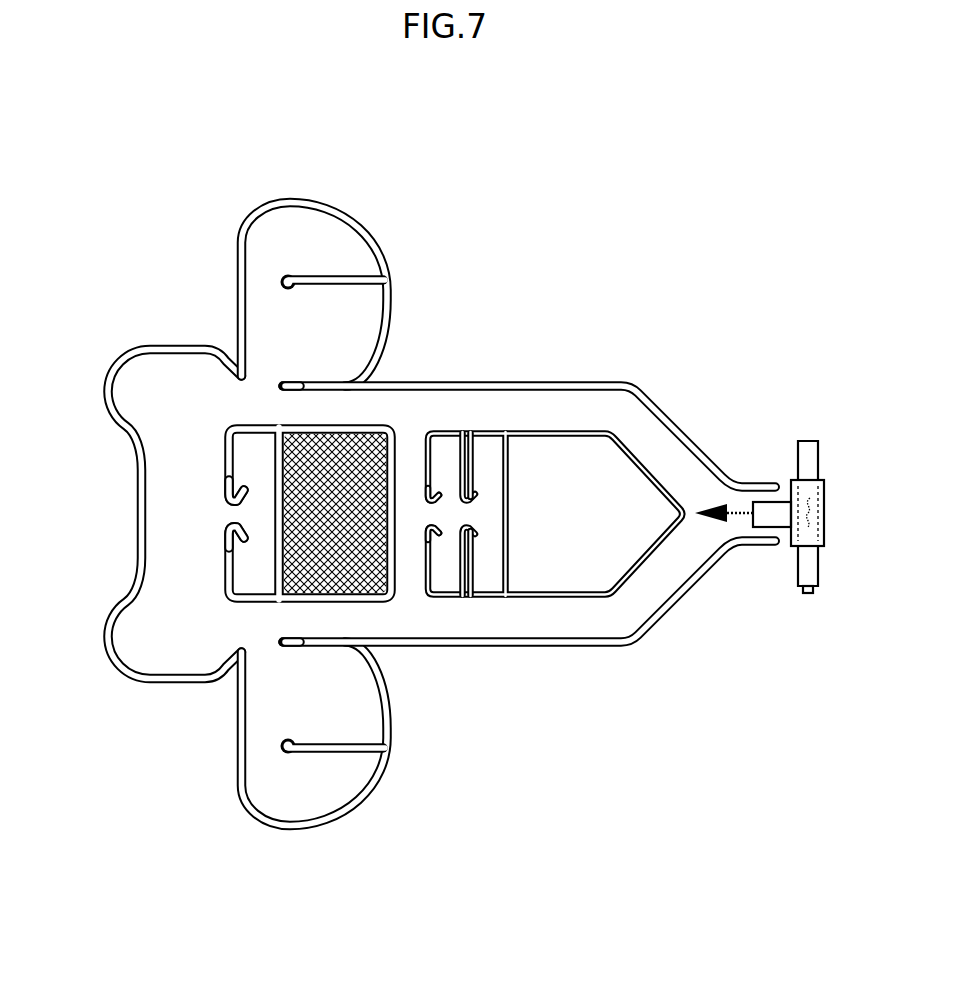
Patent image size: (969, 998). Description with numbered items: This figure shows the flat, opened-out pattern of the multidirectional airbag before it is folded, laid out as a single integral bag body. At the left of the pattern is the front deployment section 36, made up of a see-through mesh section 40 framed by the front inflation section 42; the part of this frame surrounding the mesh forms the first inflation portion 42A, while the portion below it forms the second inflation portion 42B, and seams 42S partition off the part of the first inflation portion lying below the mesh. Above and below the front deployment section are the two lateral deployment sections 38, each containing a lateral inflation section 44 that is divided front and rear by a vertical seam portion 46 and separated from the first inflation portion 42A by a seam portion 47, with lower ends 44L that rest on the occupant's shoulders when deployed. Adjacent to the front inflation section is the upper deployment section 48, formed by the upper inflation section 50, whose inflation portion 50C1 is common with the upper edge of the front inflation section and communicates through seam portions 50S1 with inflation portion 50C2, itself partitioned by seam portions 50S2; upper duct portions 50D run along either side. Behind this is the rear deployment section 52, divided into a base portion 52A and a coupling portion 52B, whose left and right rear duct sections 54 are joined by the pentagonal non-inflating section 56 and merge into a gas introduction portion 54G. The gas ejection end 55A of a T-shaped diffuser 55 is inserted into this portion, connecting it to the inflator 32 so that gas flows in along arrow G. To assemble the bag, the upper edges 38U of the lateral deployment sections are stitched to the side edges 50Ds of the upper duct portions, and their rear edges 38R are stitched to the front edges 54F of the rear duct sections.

The inflator 32 is at (818, 563).
The front deployment section 36 is at (408, 415).
The lateral deployment sections 38 is at (305, 183).
The rear edges 38R is at (272, 202).
The upper edges 38U is at (392, 288).
The mesh section 40 is at (310, 518).
The front inflation section 42 is at (175, 485).
The first inflation portion 42A is at (408, 410).
The second inflation portion 42B is at (105, 478).
The seams 42S is at (227, 568).
The lateral inflation sections 44 is at (348, 305).
The lower ends 44L is at (237, 282).
The seam portion 46 is at (313, 276).
The seam portion 47 is at (313, 383).
The upper deployment section 48 is at (508, 415).
The upper inflation section 50 is at (486, 360).
The inflation portion 50C1 is at (412, 578).
The inflation portion 50C2 is at (485, 537).
The upper duct portions 50D is at (453, 410).
The side edges 50Ds is at (487, 650).
The seam portions 50S1 is at (430, 457).
The seam portions 50S2 is at (470, 478).
The rear deployment section 52 is at (778, 465).
The base portion 52A is at (547, 360).
The coupling portion 52B is at (508, 360).
The rear duct sections 54 is at (600, 412).
The front edges 54F is at (590, 630).
The gas introduction portion 54G is at (769, 548).
The diffuser 55 is at (823, 519).
The gas ejection end 55A is at (770, 510).
The non-inflating section 56 is at (632, 560).
The gas flow arrow G is at (723, 504).